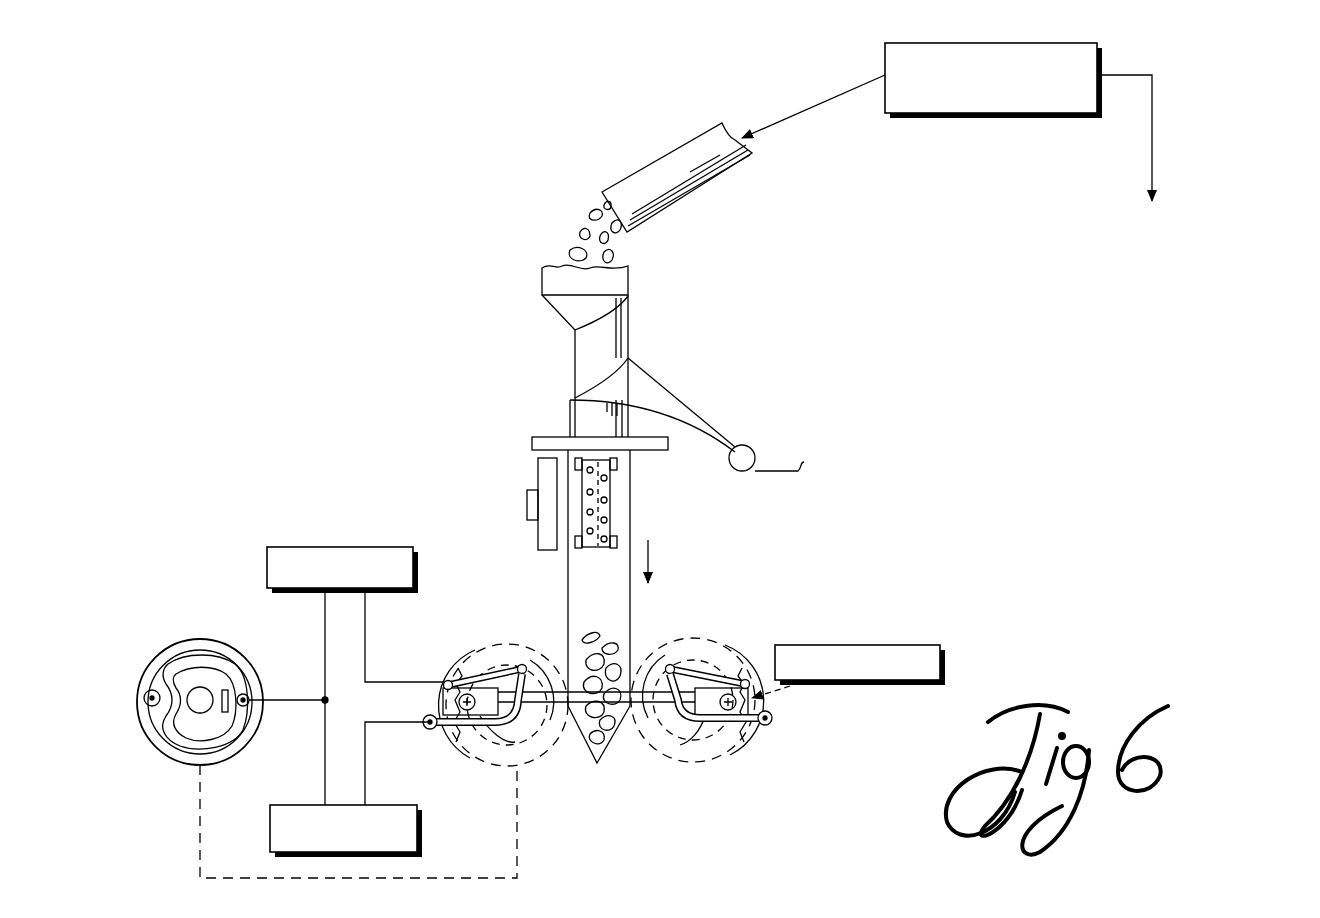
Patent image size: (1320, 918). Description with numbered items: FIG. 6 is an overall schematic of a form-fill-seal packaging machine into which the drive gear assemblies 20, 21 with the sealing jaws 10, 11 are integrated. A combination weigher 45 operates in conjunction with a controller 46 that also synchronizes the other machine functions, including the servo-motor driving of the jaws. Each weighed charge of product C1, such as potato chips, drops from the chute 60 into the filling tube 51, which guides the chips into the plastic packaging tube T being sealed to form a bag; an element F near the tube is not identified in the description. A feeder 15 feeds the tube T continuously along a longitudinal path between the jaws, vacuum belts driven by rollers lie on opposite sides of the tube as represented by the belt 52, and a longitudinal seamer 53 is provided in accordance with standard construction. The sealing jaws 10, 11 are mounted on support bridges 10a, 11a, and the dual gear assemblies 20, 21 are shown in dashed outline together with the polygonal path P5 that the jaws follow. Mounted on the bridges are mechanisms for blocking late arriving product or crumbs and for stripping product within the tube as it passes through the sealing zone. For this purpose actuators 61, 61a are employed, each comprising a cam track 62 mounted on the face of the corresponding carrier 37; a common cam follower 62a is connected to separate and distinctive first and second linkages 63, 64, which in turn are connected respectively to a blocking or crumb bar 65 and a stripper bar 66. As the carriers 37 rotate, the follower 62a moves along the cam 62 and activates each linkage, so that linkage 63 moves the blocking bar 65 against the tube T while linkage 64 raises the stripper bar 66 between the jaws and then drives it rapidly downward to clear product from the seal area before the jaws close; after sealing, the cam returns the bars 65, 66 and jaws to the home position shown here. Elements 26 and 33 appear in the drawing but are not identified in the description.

The chute 60 is at (740, 170).
The combination weigher 45 is at (1042, 106).
The controller 46 is at (1180, 178).
The charge of product C1 is at (578, 230).
The filling tube 51 is at (625, 325).
The film F is at (780, 468).
The feeder 15 is at (620, 492).
The vacuum belt 52 is at (606, 526).
The longitudinal seamer 53 is at (548, 520).
The packaging tube T is at (633, 622).
The sealing jaw 10 is at (560, 740).
The support bridge 10a is at (465, 738).
The sealing jaw 11 is at (660, 728).
The support bridge 11a is at (725, 736).
The drive gear assembly 20 is at (493, 636).
The drive gear assembly 21 is at (683, 668).
The jaw rod 26 is at (443, 728).
The blocking bar 65 is at (495, 665).
The stripper bar 66 is at (510, 735).
The polygonal path P5 is at (545, 760).
The actuator 61 is at (213, 556).
The actuator 61a is at (852, 648).
The cam track 62 is at (178, 668).
The cam follower 62a is at (247, 698).
The pin 33 is at (148, 694).
The carrier 37 is at (236, 745).
The first linkage 63 is at (362, 547).
The second linkage 64 is at (413, 847).